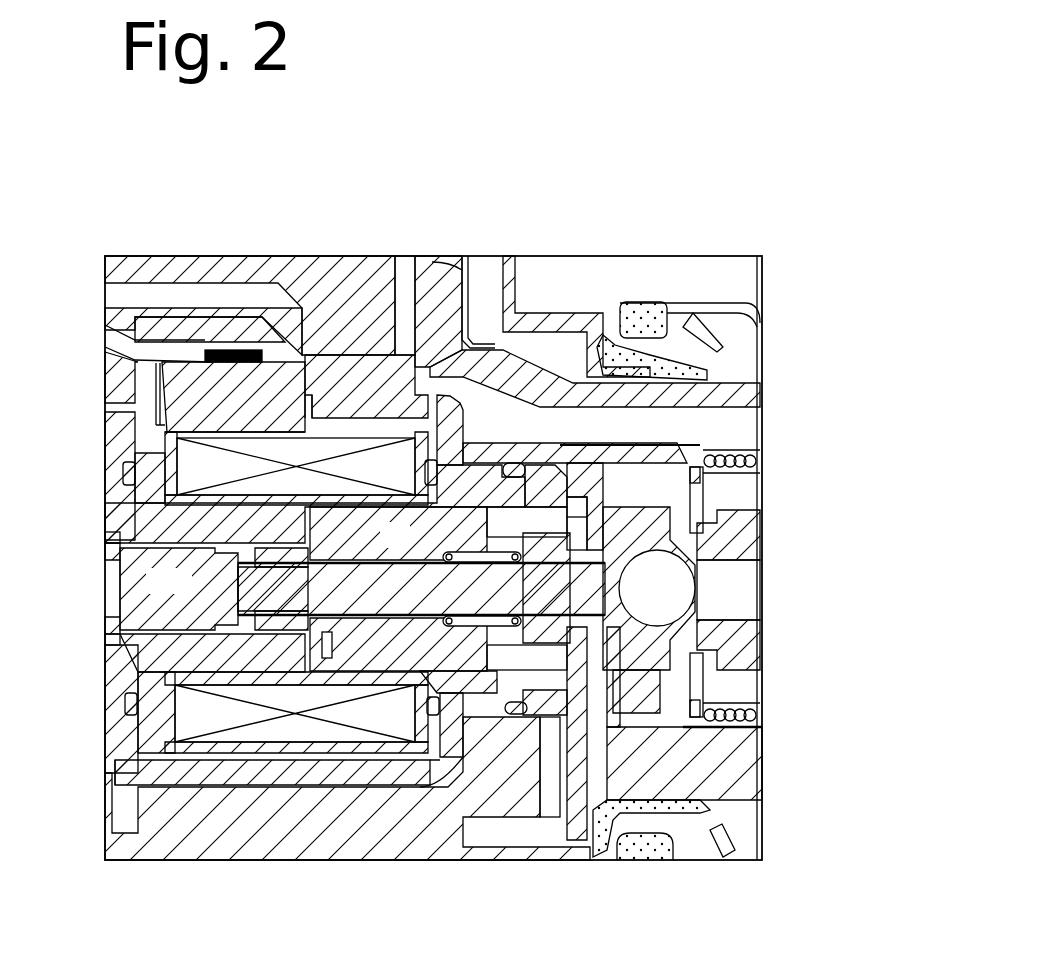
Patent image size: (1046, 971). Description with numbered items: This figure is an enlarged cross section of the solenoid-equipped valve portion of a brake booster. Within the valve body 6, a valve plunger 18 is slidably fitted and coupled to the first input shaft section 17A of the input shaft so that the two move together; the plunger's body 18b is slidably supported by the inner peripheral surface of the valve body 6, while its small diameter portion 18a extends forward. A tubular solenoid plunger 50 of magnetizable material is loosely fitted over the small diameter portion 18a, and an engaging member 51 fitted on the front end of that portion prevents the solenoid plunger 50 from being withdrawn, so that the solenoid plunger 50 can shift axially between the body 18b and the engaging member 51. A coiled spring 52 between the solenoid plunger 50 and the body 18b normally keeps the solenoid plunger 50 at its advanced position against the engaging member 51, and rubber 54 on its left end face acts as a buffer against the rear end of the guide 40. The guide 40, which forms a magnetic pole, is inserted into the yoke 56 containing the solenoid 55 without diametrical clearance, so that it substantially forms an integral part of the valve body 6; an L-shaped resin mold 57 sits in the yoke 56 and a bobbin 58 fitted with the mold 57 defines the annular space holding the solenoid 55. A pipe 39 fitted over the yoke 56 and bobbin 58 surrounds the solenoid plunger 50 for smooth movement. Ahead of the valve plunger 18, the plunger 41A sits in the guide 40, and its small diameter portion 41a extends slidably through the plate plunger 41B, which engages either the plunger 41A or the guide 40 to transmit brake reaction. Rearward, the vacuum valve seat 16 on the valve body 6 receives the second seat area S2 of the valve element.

The valve body 6 is at (230, 258).
The vacuum valve seat 16 is at (685, 712).
The first input shaft section 17A is at (745, 583).
The valve plunger 18 is at (407, 599).
The small diameter portion 18a is at (473, 589).
The body 18b is at (550, 588).
The pipe 39 is at (323, 520).
The guide 40 is at (108, 472).
The plunger 41A is at (214, 589).
The plate plunger 41B is at (108, 547).
The small diameter portion 41a is at (106, 583).
The solenoid plunger 50 is at (398, 533).
The engaging member 51 is at (276, 565).
The coiled spring 52 is at (493, 615).
The rubber 54 is at (332, 645).
The solenoid 55 is at (353, 468).
The yoke 56 is at (318, 775).
The resin mold 57 is at (393, 750).
The bobbin 58 is at (128, 706).
The second seat area S2 is at (715, 697).